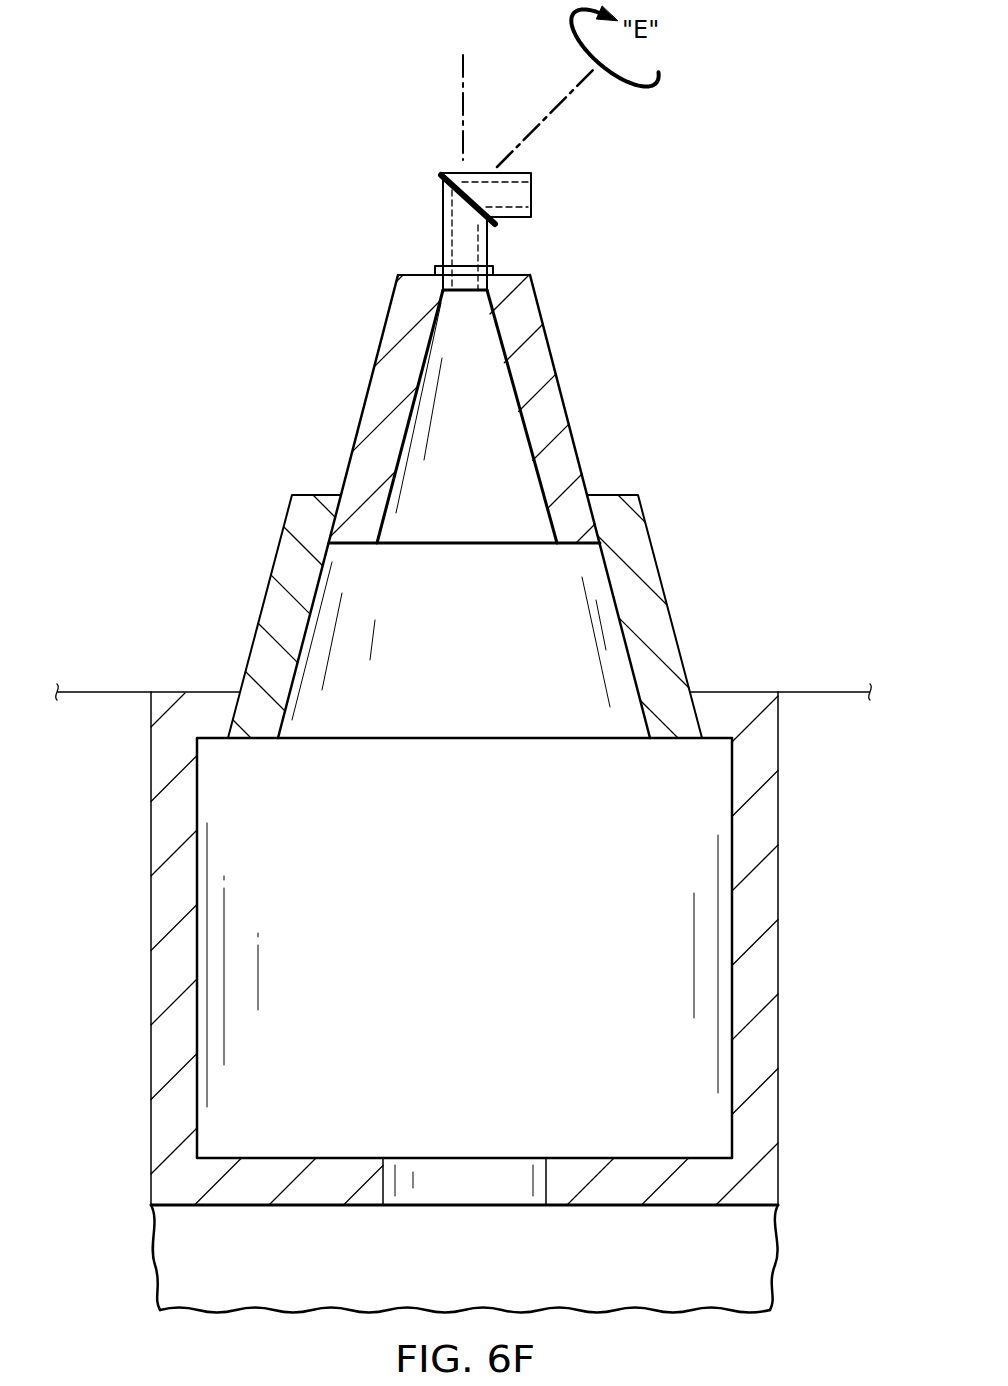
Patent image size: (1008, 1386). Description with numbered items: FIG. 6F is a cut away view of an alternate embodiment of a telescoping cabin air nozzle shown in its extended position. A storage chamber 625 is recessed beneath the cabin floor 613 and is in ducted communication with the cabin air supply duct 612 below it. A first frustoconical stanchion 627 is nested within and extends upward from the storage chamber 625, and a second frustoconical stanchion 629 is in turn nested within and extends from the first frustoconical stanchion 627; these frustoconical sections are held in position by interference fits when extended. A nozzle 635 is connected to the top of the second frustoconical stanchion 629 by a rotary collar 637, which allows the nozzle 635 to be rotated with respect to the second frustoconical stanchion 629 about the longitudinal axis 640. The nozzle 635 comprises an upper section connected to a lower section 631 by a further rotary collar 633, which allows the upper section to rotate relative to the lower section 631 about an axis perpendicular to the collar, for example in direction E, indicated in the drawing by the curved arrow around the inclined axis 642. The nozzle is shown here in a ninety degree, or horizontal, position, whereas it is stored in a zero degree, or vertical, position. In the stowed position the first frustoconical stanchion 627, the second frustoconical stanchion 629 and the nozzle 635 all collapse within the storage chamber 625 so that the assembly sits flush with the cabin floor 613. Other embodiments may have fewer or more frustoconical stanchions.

The cabin air supply duct 612 is at (787, 1271).
The cabin floor 613 is at (823, 692).
The storage chamber 625 is at (780, 962).
The first frustoconical stanchion 627 is at (655, 552).
The second frustoconical stanchion 629 is at (563, 393).
The lower section 631 is at (443, 228).
The rotary collar 633 is at (442, 172).
The nozzle 635 is at (515, 218).
The rotary collar 637 is at (435, 270).
The longitudinal axis 640 is at (461, 76).
The tilted beam axis 642 is at (573, 95).